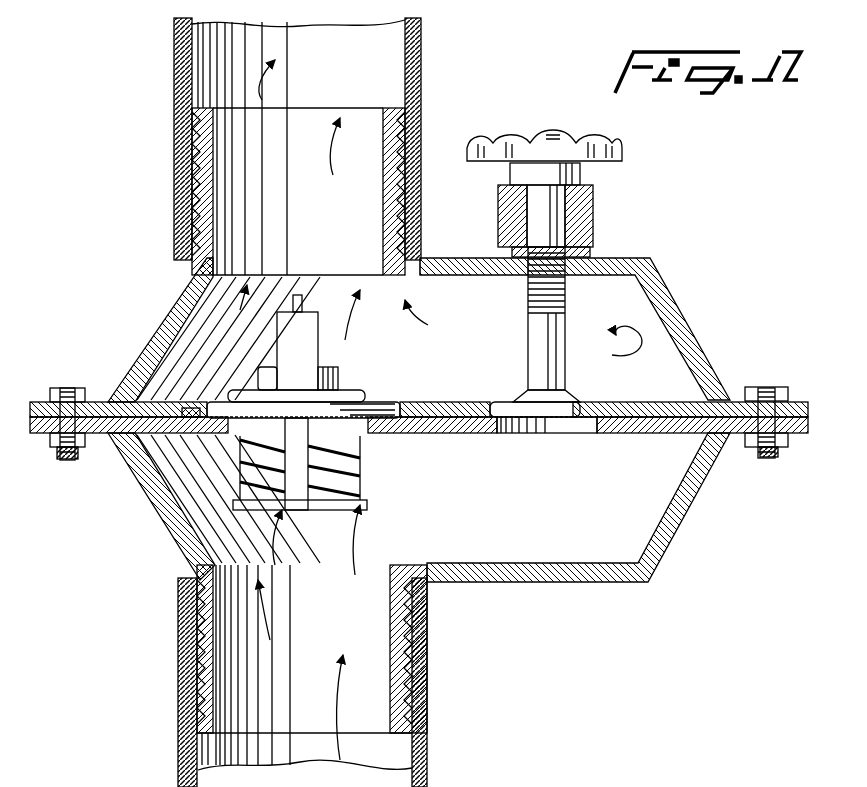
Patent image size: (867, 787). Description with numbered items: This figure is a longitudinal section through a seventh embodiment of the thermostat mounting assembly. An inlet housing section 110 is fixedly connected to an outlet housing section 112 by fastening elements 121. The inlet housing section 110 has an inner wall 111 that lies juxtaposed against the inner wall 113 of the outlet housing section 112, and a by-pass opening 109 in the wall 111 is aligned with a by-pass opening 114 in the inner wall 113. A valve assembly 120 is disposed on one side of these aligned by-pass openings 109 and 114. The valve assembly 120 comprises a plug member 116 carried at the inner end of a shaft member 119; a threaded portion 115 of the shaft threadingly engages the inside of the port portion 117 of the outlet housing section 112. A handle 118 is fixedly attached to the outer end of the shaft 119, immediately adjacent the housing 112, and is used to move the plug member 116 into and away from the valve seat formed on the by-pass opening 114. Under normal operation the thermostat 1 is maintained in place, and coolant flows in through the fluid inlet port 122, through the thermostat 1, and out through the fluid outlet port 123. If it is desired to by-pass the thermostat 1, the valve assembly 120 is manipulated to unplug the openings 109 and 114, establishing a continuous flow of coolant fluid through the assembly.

The thermostat 1 is at (348, 470).
The by-pass opening 109 is at (510, 435).
The inlet housing section 110 is at (680, 508).
The inner wall 111 is at (457, 435).
The outlet housing section 112 is at (675, 300).
The inner wall 113 is at (441, 400).
The by-pass opening 114 is at (590, 433).
The threaded portion 115 is at (622, 256).
The plug member 116 is at (585, 400).
The port portion 117 is at (597, 210).
The handle 118 is at (620, 143).
The shaft member 119 is at (535, 215).
The valve assembly 120 is at (510, 290).
The fastening elements 121 is at (772, 386).
The fluid inlet port 122 is at (415, 722).
The fluid outlet port 123 is at (410, 108).